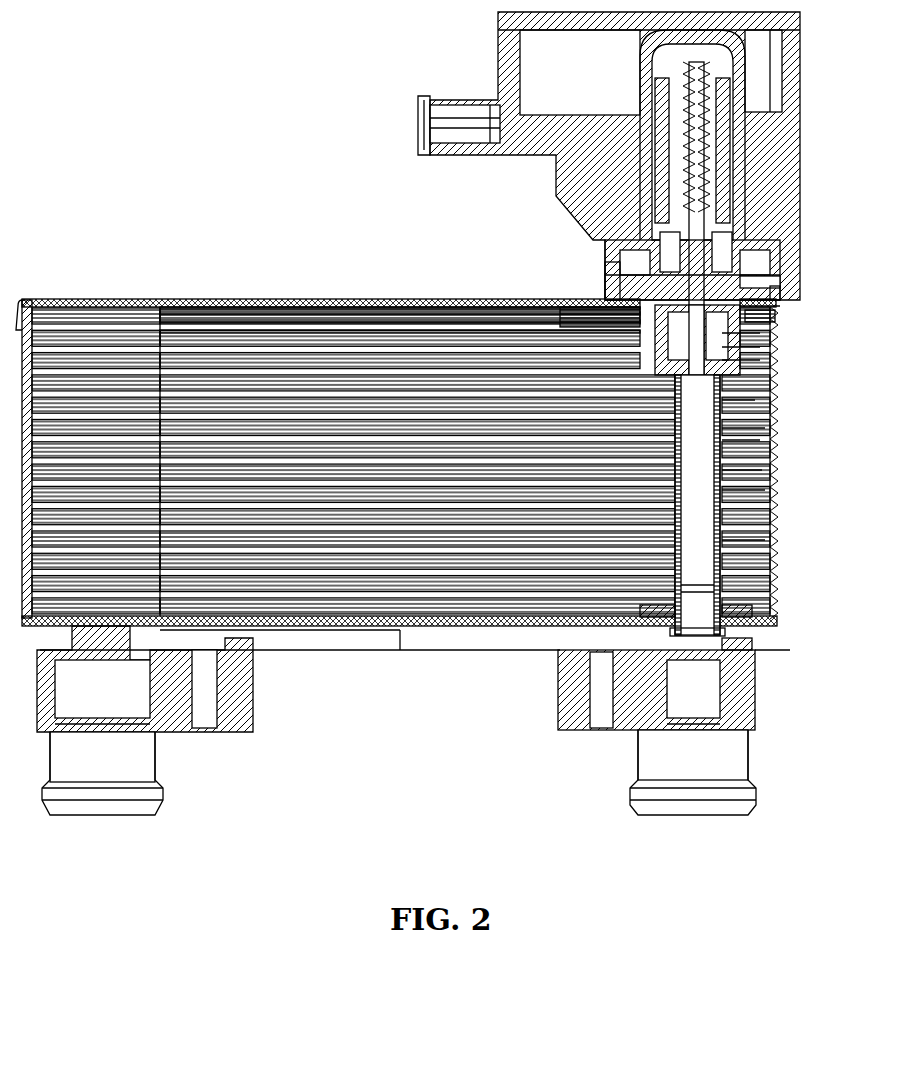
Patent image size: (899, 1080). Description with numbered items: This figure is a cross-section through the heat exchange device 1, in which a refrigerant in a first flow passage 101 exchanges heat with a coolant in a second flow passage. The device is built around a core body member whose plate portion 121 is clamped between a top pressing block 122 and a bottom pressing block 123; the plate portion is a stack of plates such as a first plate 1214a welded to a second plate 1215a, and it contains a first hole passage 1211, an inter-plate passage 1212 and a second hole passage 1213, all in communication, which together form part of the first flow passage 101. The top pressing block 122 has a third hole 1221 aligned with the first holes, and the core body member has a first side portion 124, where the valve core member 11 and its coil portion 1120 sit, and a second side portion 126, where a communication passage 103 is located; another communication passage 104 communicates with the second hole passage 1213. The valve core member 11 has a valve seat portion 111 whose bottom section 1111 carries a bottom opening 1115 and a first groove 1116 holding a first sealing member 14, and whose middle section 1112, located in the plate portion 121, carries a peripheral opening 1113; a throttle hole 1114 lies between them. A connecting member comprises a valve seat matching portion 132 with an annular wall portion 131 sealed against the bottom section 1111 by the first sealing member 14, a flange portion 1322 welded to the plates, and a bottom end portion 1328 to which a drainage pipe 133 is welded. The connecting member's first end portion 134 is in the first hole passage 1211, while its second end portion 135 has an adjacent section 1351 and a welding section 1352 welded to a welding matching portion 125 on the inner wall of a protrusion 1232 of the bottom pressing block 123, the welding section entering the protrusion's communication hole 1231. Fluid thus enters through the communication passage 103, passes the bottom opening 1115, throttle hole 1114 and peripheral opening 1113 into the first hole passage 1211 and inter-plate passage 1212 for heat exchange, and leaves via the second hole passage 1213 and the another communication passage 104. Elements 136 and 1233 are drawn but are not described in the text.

The heat exchange device 1 is at (305, 175).
The coil portion 1120 is at (778, 138).
The valve core member 11 is at (768, 257).
The valve seat portion 111 is at (782, 291).
The bottom section 1111 is at (755, 400).
The middle section 1112 is at (776, 318).
The peripheral opening 1113 is at (762, 334).
The throttle hole 1114 is at (762, 347).
The bottom opening 1115 is at (765, 428).
The first groove 1116 is at (762, 360).
The first sealing member 14 is at (760, 372).
The valve seat matching portion 132 is at (756, 378).
The flange portion 1322 is at (752, 283).
The bottom end portion 1328 is at (758, 440).
The drainage pipe 133 is at (762, 470).
The first end portion 134 is at (608, 298).
The second end portion 135 is at (668, 405).
The adjacent section 1351 is at (752, 590).
The welding section 1352 is at (668, 650).
The tube support 136 is at (765, 540).
The first flow passage 101 is at (738, 556).
The plate portion 121 is at (763, 512).
The first hole passage 1211 is at (765, 490).
The inter-plate passage 1212 is at (196, 340).
The second hole passage 1213 is at (100, 330).
The first plate 1214a is at (318, 318).
The second plate 1215a is at (360, 318).
The top pressing block 122 is at (410, 300).
The third hole 1221 is at (773, 306).
The bottom pressing block 123 is at (737, 680).
The communication hole 1231 is at (720, 655).
The protrusion 1232 is at (742, 620).
The base channel 1233 is at (650, 640).
The first side portion 124 is at (468, 300).
The welding matching portion 125 is at (715, 632).
The second side portion 126 is at (445, 651).
The annular wall portion 131 is at (545, 323).
The communication passage 103 is at (700, 730).
The another communication passage 104 is at (105, 730).